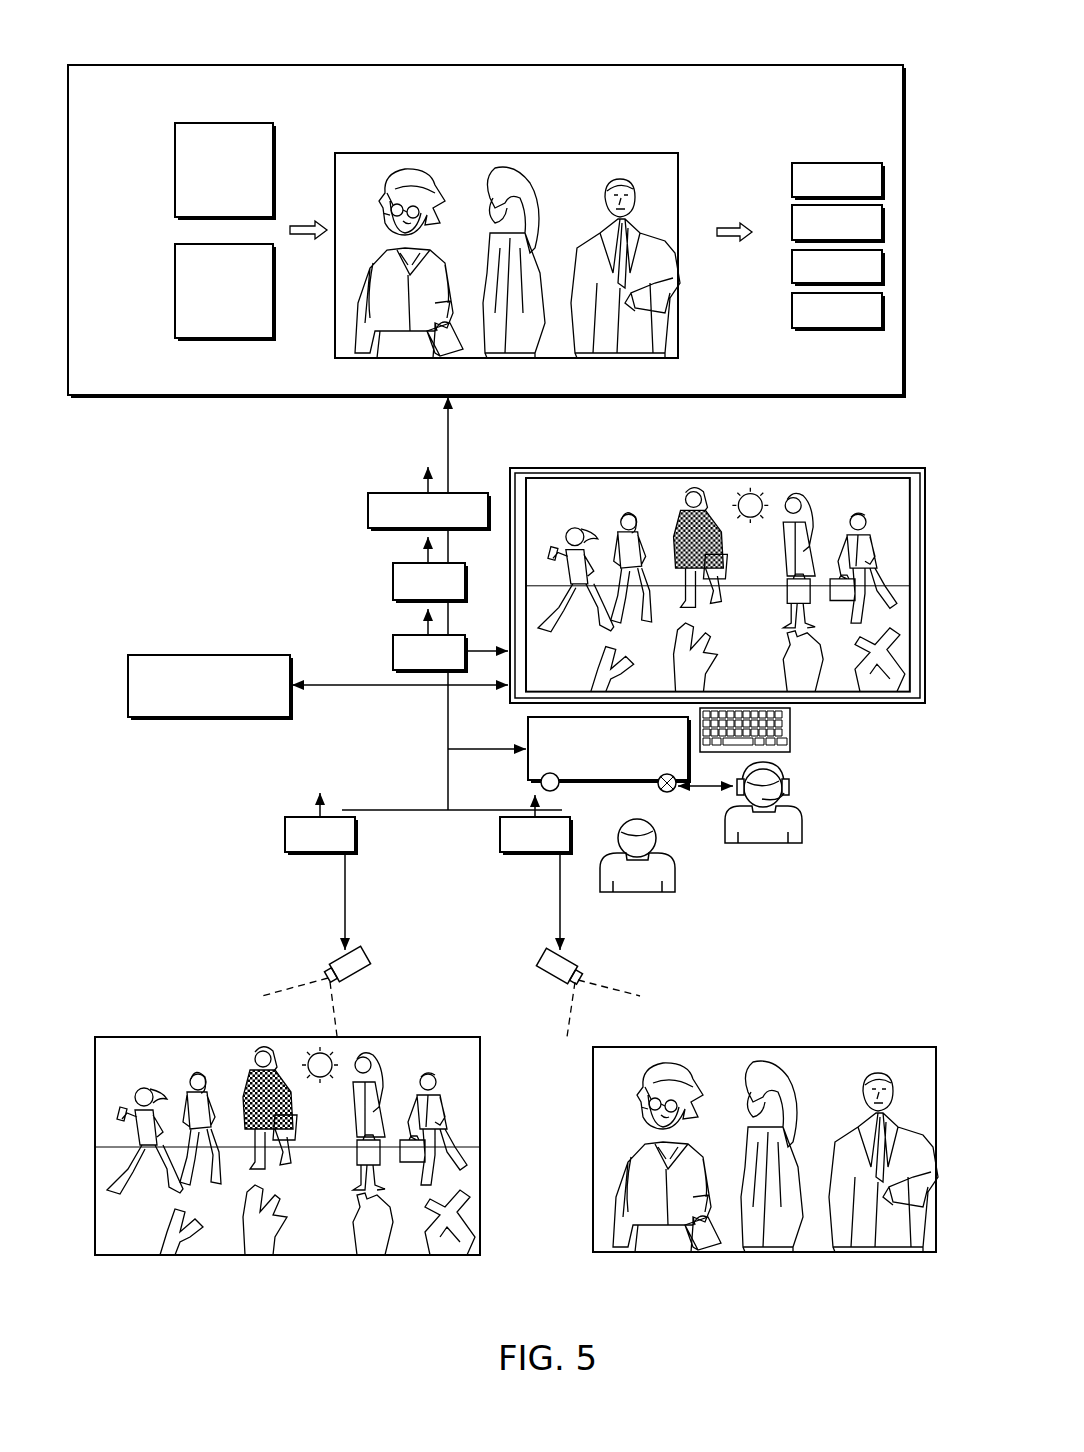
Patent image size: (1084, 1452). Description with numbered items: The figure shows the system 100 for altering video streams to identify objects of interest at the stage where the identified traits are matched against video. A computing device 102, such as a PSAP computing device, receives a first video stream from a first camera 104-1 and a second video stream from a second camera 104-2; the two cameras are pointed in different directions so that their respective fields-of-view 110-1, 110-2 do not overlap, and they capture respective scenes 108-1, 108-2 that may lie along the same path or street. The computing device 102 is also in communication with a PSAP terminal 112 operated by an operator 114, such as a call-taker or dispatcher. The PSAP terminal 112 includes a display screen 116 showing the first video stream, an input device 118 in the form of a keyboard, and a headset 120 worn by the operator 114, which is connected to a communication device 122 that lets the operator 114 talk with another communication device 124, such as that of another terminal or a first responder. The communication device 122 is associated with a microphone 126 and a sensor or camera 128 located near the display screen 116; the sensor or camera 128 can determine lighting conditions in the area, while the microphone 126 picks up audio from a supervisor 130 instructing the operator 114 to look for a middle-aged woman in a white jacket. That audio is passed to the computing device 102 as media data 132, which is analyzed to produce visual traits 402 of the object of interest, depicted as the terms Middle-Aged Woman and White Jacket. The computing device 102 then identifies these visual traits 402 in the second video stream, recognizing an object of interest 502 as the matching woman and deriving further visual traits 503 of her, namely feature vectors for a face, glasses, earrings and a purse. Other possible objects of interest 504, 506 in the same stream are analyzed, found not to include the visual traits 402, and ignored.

The system 100 is at (228, 30).
The computing device 102 is at (484, 65).
The first camera 104-1 is at (366, 968).
The second camera 104-2 is at (540, 967).
The first scene 108-1 is at (162, 1020).
The second scene 108-2 is at (782, 1030).
The first field-of-view 110-1 is at (262, 992).
The second field-of-view 110-2 is at (625, 992).
The PSAP terminal 112 is at (858, 796).
The operator 114 is at (790, 815).
The display screen 116 is at (878, 467).
The input device 118 is at (790, 729).
The headset 120 is at (790, 771).
The communication device 122 is at (527, 734).
The communication device 124 is at (208, 654).
The microphone 126 is at (659, 789).
The sensor and/or camera 128 is at (540, 781).
The supervisor 130 is at (677, 886).
The media data 132 is at (368, 514).
The visual traits 402 is at (152, 110).
The object of interest 502 is at (401, 170).
The possible object of interest 504 is at (516, 173).
The possible object of interest 506 is at (613, 173).
The further visual traits 503 is at (786, 150).